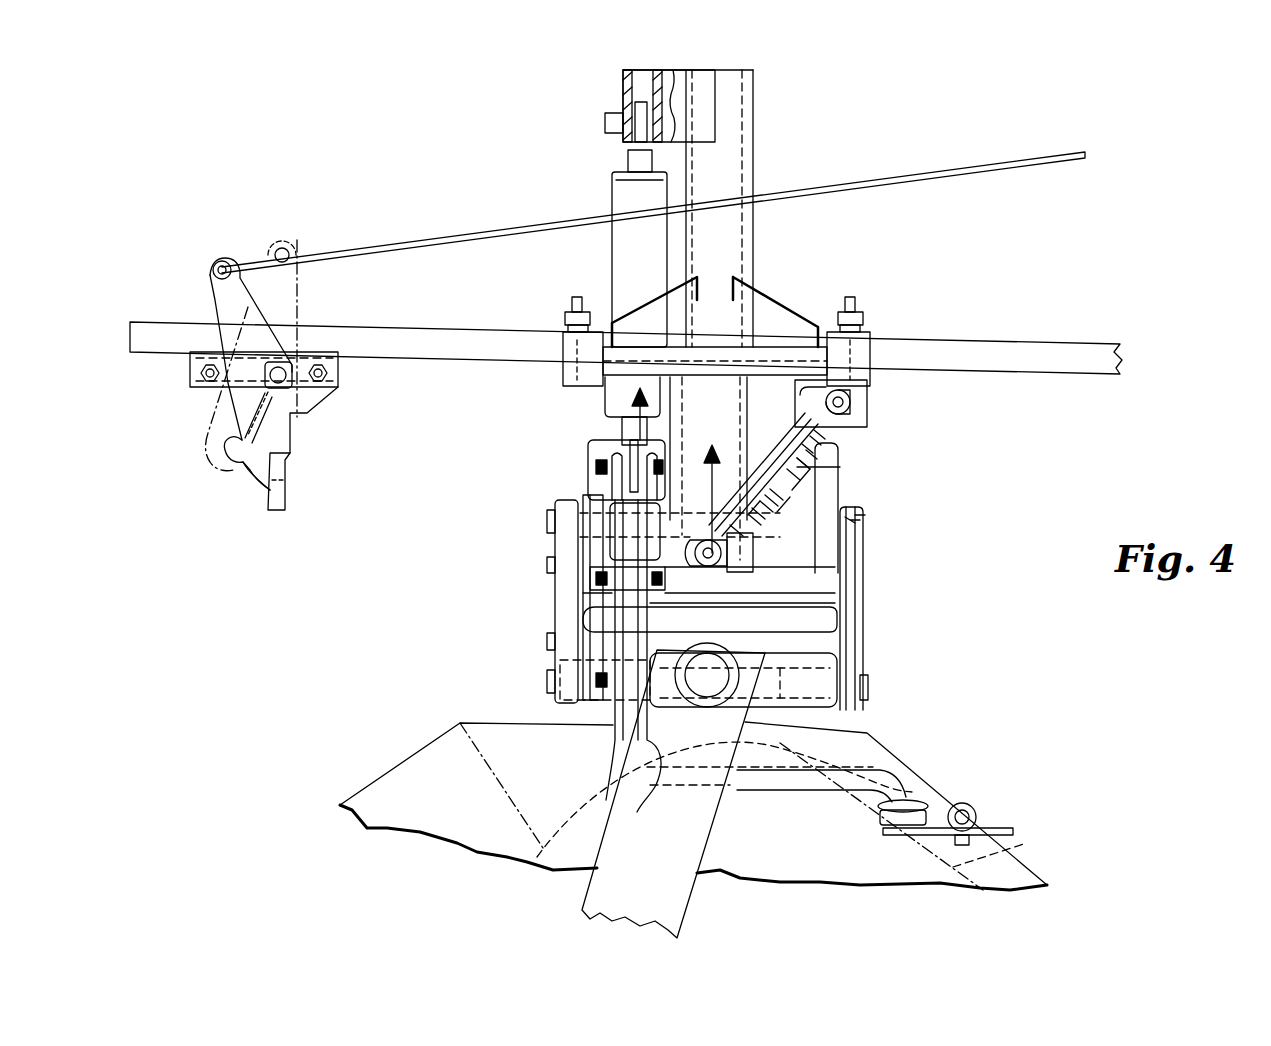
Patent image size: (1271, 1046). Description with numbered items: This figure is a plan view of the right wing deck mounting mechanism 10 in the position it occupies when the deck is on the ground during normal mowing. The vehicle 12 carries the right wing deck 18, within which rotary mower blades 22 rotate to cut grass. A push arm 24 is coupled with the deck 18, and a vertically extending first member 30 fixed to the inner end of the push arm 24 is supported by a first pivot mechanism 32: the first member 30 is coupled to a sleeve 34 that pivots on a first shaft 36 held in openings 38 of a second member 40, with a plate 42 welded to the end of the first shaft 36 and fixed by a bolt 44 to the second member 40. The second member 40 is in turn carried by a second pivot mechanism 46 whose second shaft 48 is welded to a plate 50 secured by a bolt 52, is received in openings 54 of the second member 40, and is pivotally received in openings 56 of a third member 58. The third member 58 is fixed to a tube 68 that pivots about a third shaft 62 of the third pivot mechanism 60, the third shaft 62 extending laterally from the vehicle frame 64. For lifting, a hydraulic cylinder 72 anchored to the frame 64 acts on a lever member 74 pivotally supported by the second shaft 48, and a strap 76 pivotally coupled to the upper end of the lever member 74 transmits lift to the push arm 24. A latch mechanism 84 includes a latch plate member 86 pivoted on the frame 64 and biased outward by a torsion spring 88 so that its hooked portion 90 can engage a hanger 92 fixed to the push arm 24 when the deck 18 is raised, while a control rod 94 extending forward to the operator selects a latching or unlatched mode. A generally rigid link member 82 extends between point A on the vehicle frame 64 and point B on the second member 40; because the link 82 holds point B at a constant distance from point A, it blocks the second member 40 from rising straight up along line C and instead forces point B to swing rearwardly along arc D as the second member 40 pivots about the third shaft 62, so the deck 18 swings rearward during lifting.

The wing deck mounting mechanism 10 is at (506, 498).
The vehicle 12 is at (404, 356).
The right wing deck 18 is at (953, 797).
The rotary mower blades 22 is at (1027, 845).
The push arm 24 is at (708, 822).
The first member 30 is at (729, 702).
The first pivot mechanism 32 is at (878, 690).
The sleeve 34 is at (853, 657).
The first shaft 36 is at (864, 702).
The openings 38 is at (548, 686).
The second member 40 is at (557, 618).
The plate 42 is at (548, 661).
The bolt 44 is at (548, 642).
The second pivot mechanism 46 is at (885, 533).
The second shaft 48 is at (864, 548).
The plate 50 is at (555, 547).
The bolt 52 is at (550, 565).
The openings 54 is at (545, 520).
The openings 56 is at (860, 520).
The third member 58 is at (832, 456).
The third pivot mechanism 60 is at (760, 415).
The third shaft 62 is at (746, 420).
The vehicle frame 64 is at (457, 360).
The tube 68 is at (820, 345).
The hydraulic cylinder 72 is at (610, 183).
The lever member 74 is at (705, 545).
The strap 76 is at (641, 790).
The link member 82 is at (825, 460).
The latch mechanism 84 is at (222, 487).
The latch plate member 86 is at (228, 412).
The torsion spring 88 is at (293, 420).
The hooked portion 90 is at (286, 473).
The hanger 92 is at (287, 458).
The control rod 94 is at (398, 242).
The point A is at (850, 402).
The point B is at (695, 580).
The line C is at (738, 462).
The arc D is at (628, 386).